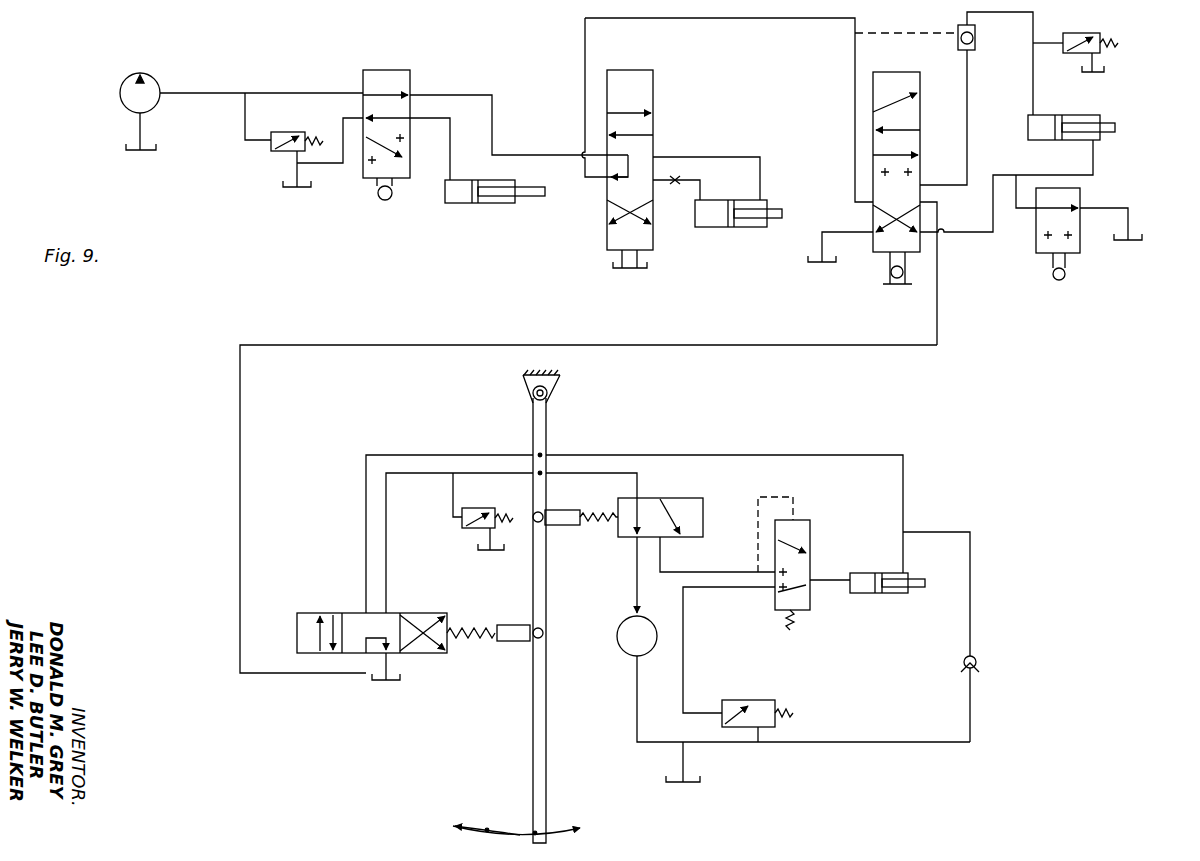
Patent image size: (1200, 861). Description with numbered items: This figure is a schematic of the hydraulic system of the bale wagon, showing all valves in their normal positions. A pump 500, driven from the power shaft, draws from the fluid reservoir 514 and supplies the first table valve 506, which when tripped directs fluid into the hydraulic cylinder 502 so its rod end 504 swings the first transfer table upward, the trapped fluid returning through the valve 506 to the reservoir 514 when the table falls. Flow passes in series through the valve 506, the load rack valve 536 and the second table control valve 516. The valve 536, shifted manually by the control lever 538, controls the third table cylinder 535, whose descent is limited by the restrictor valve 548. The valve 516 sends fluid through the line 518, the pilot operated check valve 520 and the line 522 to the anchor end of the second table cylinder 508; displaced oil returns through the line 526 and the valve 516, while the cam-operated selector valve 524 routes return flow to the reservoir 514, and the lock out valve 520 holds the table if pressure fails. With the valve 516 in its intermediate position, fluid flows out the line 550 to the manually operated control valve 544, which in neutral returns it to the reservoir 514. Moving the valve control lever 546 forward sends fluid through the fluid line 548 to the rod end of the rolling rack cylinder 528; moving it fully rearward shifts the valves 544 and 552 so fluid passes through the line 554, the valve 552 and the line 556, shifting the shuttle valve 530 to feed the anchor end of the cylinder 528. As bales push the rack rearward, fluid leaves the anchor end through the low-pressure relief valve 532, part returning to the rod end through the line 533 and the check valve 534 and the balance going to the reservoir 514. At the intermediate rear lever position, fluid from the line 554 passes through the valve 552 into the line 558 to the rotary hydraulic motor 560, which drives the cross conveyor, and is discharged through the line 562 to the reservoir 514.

The pump 500 is at (150, 78).
The hydraulic cylinder 502 is at (476, 180).
The rod end 504 is at (532, 197).
The valve 506 is at (367, 190).
The second table cylinder 508 is at (1102, 118).
The fluid reservoir 514 is at (148, 158).
The second table control valve 516 is at (920, 146).
The line 518 is at (968, 105).
The pilot operated check valve 520 is at (956, 26).
The line 522 is at (1036, 70).
The selector valve 524 is at (1085, 197).
The line 526 is at (955, 238).
The rolling rack cylinder 528 is at (870, 594).
The control valve 530 is at (812, 538).
The low-pressure relief valve 532 is at (757, 700).
The line 533 is at (972, 702).
The check valve 534 is at (980, 662).
The third table cylinder 535 is at (718, 199).
The valve 536 is at (657, 150).
The control lever 538 is at (630, 271).
The manually operated control valve 544 is at (304, 613).
The valve control lever 546 is at (532, 737).
The fluid line / restrictor valve 548 is at (675, 187).
The line 550 is at (325, 345).
The valve 552 is at (681, 498).
The line 554 is at (437, 474).
The line 556 is at (690, 572).
The line 558 is at (636, 572).
The rotary hydraulic motor 560 is at (621, 624).
The line 562 is at (634, 707).